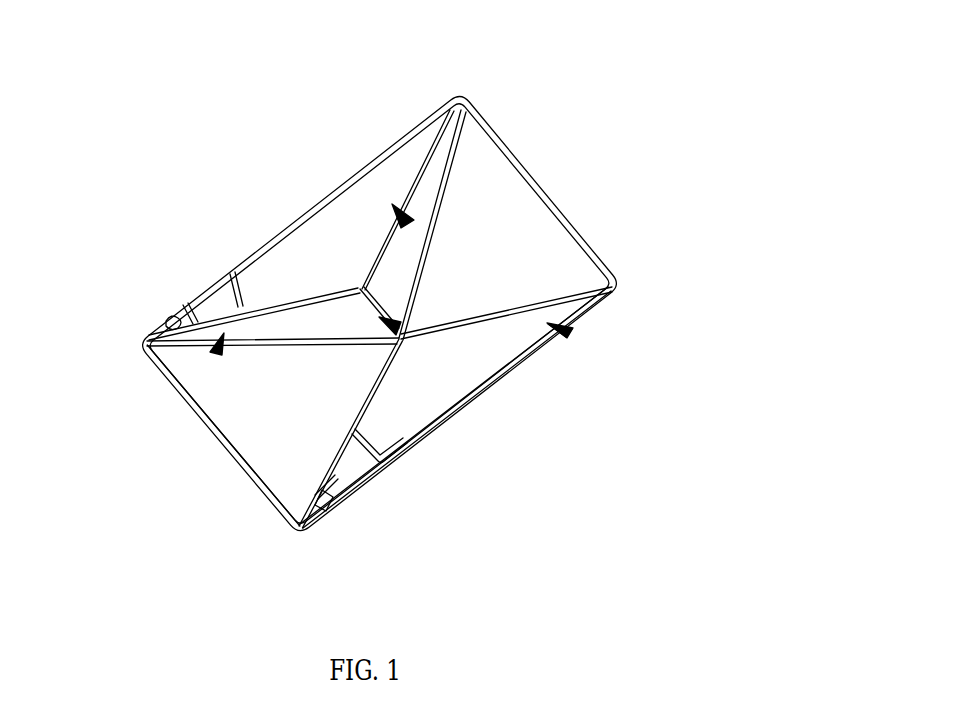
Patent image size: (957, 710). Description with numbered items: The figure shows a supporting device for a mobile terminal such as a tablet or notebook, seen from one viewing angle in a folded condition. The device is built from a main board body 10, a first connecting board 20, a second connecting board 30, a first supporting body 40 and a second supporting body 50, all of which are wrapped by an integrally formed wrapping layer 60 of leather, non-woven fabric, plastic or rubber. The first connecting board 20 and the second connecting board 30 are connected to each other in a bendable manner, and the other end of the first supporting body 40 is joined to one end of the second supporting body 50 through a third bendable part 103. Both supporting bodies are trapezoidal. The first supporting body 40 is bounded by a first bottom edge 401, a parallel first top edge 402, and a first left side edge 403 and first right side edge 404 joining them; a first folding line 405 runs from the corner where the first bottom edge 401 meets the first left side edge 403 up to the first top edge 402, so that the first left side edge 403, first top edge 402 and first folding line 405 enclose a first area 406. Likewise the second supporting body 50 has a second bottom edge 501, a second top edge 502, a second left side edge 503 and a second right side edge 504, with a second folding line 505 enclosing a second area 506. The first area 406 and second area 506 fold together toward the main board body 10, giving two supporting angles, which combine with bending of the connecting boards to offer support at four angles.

The main board body 10 is at (400, 417).
The first connecting board 20 is at (355, 465).
The second connecting board 30 is at (166, 323).
The first supporting body 40 is at (250, 421).
The first bottom edge 401 is at (266, 497).
The first top edge 402 is at (362, 288).
The first left side edge 403 is at (258, 306).
The first right side edge 404 is at (340, 459).
The first folding line 405 is at (150, 351).
The first area 406 is at (212, 349).
The second supporting body 50 is at (547, 252).
The second bottom edge 501 is at (543, 196).
The second top edge 502 is at (379, 306).
The second left side edge 503 is at (429, 143).
The second right side edge 504 is at (472, 326).
The second folding line 505 is at (442, 192).
The second area 506 is at (397, 206).
The wrapping layer 60 is at (572, 339).
The third bendable part 103 is at (406, 331).